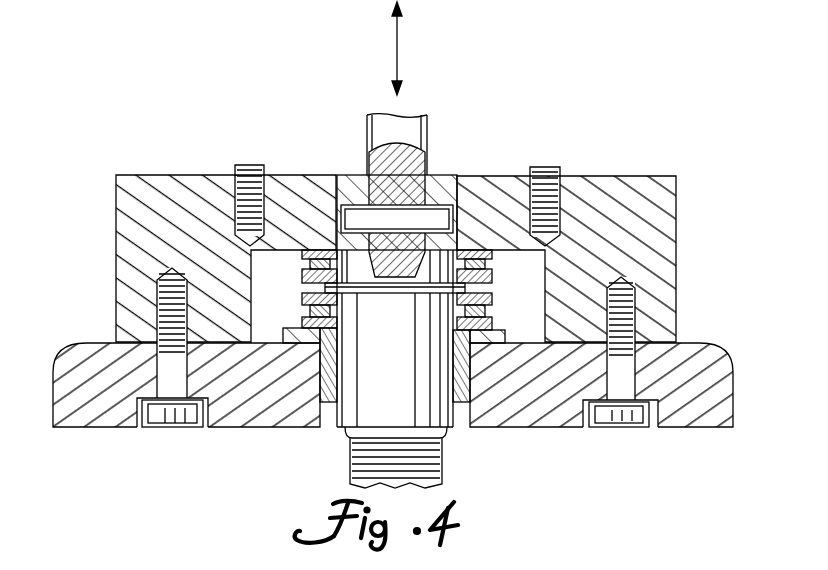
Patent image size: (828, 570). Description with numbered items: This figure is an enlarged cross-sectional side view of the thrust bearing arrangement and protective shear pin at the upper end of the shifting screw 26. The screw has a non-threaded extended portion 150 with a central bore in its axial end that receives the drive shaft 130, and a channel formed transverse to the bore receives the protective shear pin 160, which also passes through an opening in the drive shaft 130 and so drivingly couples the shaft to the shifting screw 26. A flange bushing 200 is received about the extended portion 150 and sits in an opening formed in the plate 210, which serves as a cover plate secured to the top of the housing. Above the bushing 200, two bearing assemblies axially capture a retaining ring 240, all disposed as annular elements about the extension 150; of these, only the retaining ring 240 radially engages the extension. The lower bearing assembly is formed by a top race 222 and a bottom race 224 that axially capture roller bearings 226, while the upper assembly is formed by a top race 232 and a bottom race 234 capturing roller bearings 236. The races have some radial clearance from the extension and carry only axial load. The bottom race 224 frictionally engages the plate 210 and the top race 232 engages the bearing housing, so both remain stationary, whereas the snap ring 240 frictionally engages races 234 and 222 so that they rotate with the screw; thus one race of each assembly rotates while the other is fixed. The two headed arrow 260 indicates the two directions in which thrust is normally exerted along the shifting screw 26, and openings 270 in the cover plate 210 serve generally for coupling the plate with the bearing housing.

The shifting screw 26 is at (443, 455).
The drive shaft 130 is at (427, 120).
The extended portion of shifting screw 150 is at (406, 366).
The protective shear pin 160 is at (404, 227).
The flange bushing 200 is at (476, 385).
The plate 210 is at (742, 395).
The top race 222 is at (492, 302).
The bottom race 224 is at (505, 333).
The roller bearings 226 is at (302, 310).
The top race 232 is at (305, 253).
The bottom race 234 is at (302, 275).
The roller bearings 236 is at (513, 238).
The retaining ring 240 is at (487, 289).
The two headed arrow 260 is at (397, 46).
The openings 270 is at (188, 360).